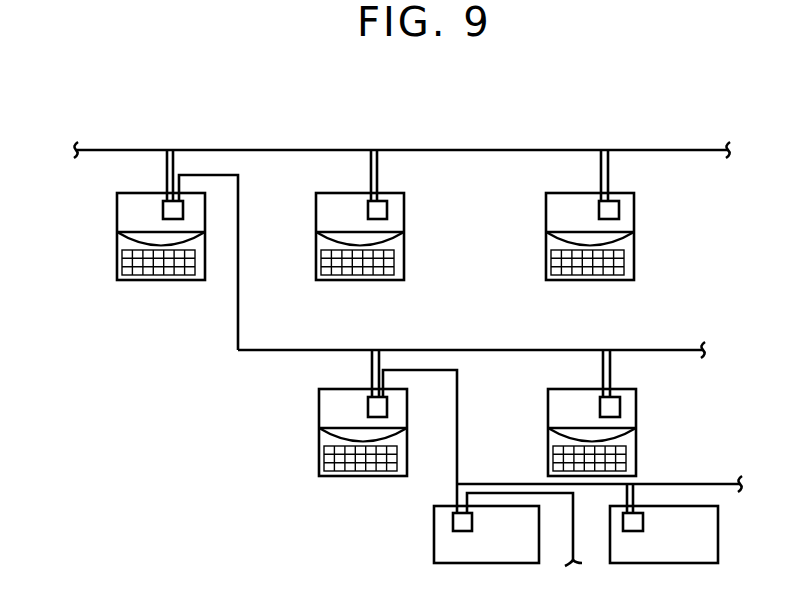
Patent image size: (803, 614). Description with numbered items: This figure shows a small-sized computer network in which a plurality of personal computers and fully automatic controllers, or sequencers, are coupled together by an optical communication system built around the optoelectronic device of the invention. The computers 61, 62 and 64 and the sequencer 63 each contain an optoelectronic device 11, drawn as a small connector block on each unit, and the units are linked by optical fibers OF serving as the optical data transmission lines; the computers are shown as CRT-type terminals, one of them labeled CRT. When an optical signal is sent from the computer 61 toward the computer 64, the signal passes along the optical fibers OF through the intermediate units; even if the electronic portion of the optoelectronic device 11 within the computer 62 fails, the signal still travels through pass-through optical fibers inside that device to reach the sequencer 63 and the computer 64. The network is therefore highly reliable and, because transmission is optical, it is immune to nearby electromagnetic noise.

The optoelectronic device 11 is at (183, 209).
The computer 61 is at (117, 250).
The computer 62 is at (319, 444).
The sequencer 63 is at (434, 548).
The computer 64 is at (548, 417).
The optical fiber OF is at (260, 149).
The CRT display terminal CRT is at (330, 236).